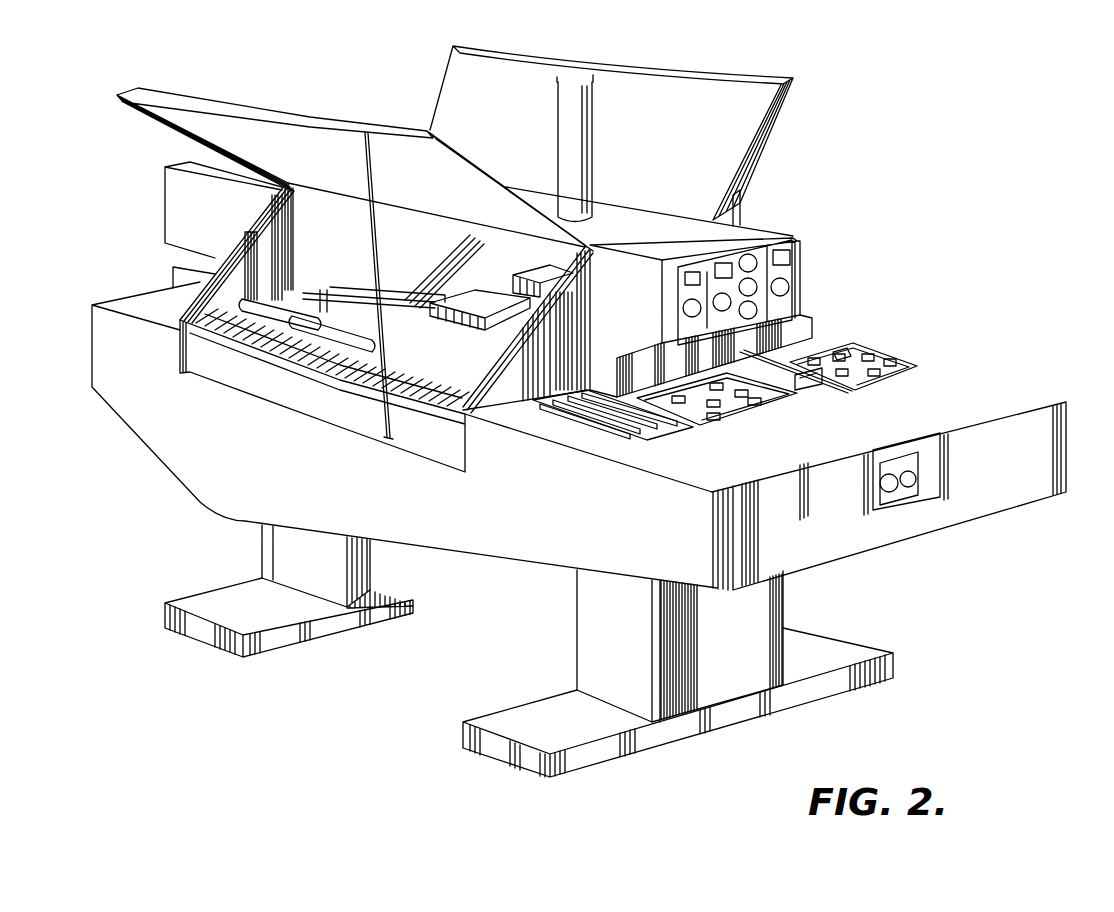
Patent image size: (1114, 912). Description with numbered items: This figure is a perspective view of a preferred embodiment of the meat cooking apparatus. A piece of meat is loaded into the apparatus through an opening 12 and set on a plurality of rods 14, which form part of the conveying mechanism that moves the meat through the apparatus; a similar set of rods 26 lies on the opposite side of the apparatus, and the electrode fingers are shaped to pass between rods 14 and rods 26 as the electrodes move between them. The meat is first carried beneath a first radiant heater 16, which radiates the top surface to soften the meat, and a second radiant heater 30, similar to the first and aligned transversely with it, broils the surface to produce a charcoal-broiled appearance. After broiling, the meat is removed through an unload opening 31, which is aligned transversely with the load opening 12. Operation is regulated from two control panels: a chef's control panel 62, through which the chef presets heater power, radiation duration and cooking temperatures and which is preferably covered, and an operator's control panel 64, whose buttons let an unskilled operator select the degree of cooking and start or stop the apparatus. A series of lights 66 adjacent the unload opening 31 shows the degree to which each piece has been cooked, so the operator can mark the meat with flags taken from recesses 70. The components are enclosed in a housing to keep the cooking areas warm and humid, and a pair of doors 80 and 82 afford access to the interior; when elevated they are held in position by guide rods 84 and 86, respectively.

The opening 12 is at (600, 413).
The rods 14 is at (457, 398).
The first radiant heater 16 is at (473, 297).
The rods 26 is at (847, 382).
The second radiant heater 30 is at (548, 270).
The opening 31 is at (780, 350).
The chef's control panel 62 is at (788, 272).
The operator's control panel 64 is at (763, 402).
The lights 66 is at (860, 368).
The recesses 70 is at (840, 355).
The door 80 is at (357, 117).
The door 82 is at (712, 82).
The guide rod 84 is at (367, 227).
The guide rod 86 is at (743, 207).